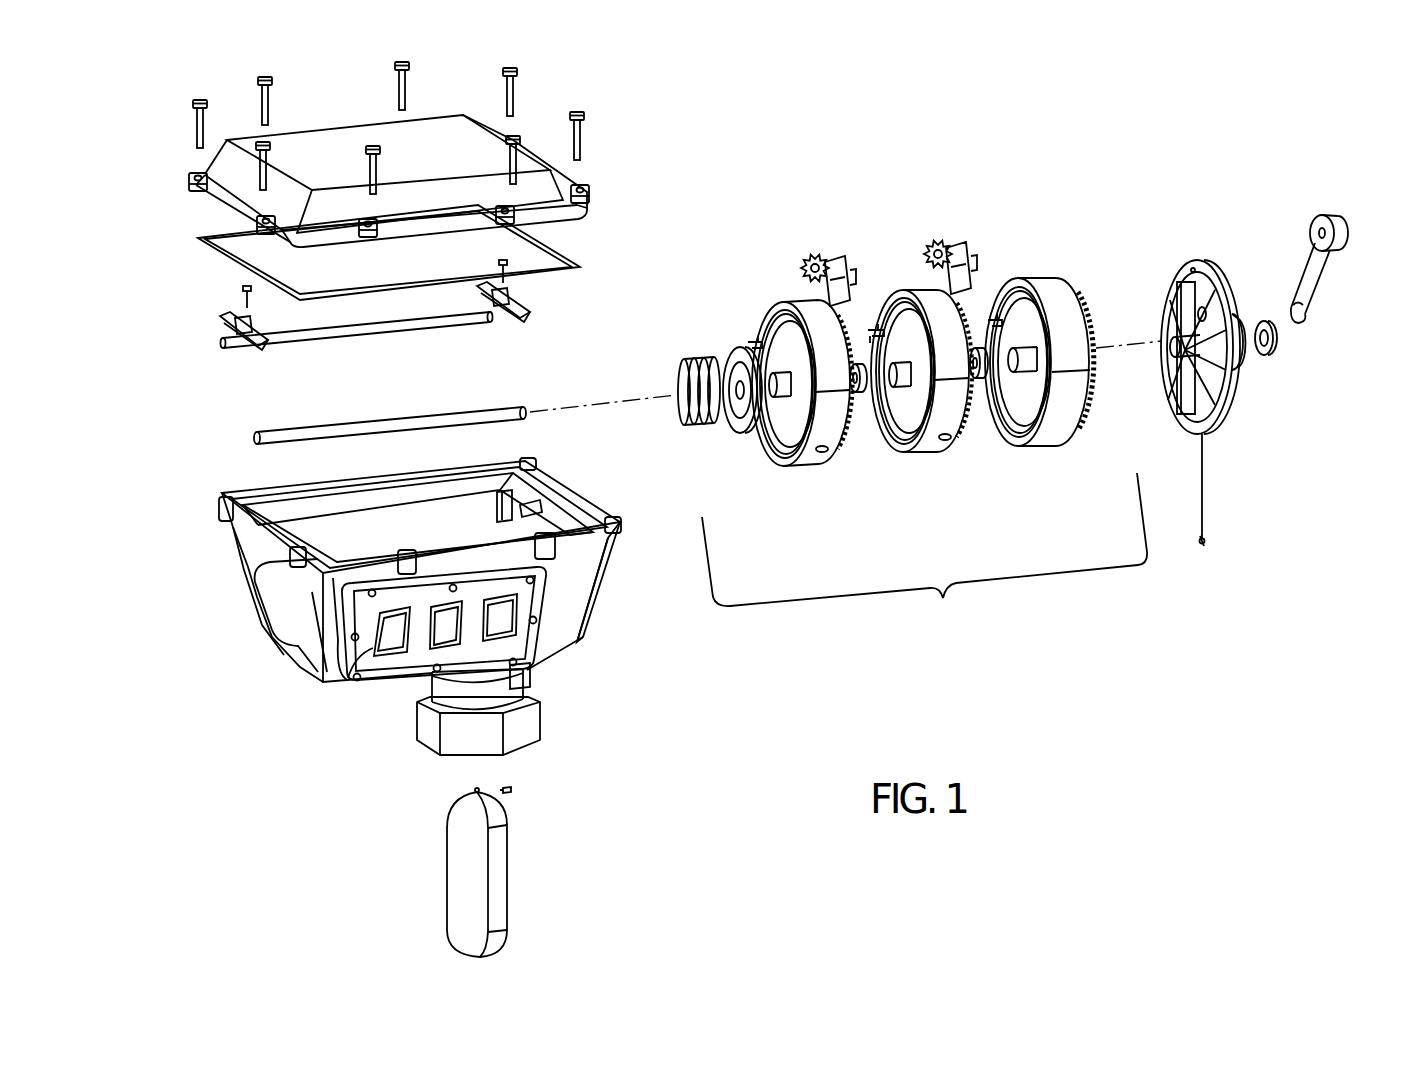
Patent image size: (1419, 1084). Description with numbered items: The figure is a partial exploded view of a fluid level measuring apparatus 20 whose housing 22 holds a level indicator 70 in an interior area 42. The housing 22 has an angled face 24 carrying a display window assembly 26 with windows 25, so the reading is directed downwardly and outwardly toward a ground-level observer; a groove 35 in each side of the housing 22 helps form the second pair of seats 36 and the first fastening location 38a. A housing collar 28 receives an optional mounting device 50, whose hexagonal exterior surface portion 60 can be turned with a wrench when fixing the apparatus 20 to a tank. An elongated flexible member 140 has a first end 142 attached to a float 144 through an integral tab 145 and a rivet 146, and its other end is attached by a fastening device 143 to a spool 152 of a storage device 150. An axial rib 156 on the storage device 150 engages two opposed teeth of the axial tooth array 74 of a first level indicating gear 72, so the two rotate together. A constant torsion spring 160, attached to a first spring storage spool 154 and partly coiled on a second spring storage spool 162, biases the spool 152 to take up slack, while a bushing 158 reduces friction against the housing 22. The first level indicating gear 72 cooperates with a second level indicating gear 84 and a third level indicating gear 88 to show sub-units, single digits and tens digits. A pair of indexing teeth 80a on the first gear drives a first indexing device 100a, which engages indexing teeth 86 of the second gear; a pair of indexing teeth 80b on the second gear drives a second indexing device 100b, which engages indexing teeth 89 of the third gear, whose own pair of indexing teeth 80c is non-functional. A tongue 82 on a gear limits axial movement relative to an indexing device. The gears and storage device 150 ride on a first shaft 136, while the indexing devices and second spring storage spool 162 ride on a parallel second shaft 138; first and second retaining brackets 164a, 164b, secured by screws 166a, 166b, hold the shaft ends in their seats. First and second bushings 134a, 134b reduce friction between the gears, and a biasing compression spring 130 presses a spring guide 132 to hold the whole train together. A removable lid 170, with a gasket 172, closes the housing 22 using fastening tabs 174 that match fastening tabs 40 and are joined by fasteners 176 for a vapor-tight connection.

The fluid level measuring apparatus 20 is at (713, 200).
The housing 22 is at (610, 588).
The angled face 24 is at (575, 638).
The window 25 is at (348, 678).
The display window assembly 26 is at (556, 652).
The housing collar 28 is at (432, 682).
The groove 35 is at (268, 623).
The second pair of seats 36 is at (497, 502).
The first fastening location 38a is at (540, 511).
The fastening tab 40 is at (262, 566).
The interior area 42 is at (300, 513).
The mounting device 50 is at (405, 733).
The exterior surface portion 60 is at (525, 748).
The level indicator 70 is at (924, 554).
The first level indicating gear 72 is at (1050, 452).
The axial tooth array 74 is at (1083, 432).
The pair of indexing teeth 80a is at (979, 312).
The pair of indexing teeth 80b is at (861, 325).
The pair of non-functional indexing teeth 80c is at (744, 338).
The tongue 82 is at (1027, 285).
The second level indicating gear 84 is at (926, 470).
The indexing teeth 86 is at (950, 440).
The third level indicating gear 88 is at (808, 477).
The indexing teeth 89 is at (830, 480).
The first indexing device 100a is at (948, 230).
The second indexing device 100b is at (826, 237).
The biasing compression spring 130 is at (677, 367).
The spring guide 132 is at (727, 357).
The first bushing 134a is at (982, 393).
The second bushing 134b is at (858, 398).
The first shaft 136 is at (418, 418).
The second shaft 138 is at (340, 338).
The elongated flexible member 140 is at (1212, 498).
The first end 142 is at (1208, 544).
The fastening device 143 is at (1204, 305).
The float 144 is at (508, 870).
The integral tab 145 is at (474, 790).
The rivet 146 is at (516, 791).
The storage device 150 is at (1262, 400).
The spool 152 is at (1232, 423).
The first spring storage spool 154 is at (1250, 360).
The axial rib 156 is at (1176, 282).
The bushing 158 is at (1277, 342).
The constant torsion spring 160 is at (1320, 284).
The second spring storage spool 162 is at (1350, 232).
The first retaining bracket 164a is at (519, 299).
The second retaining bracket 164b is at (224, 318).
The screw 166a is at (497, 264).
The screw 166b is at (241, 289).
The removable lid 170 is at (330, 130).
The gasket 172 is at (197, 238).
The fastening tab 174 is at (189, 183).
The fastener 176 is at (200, 96).